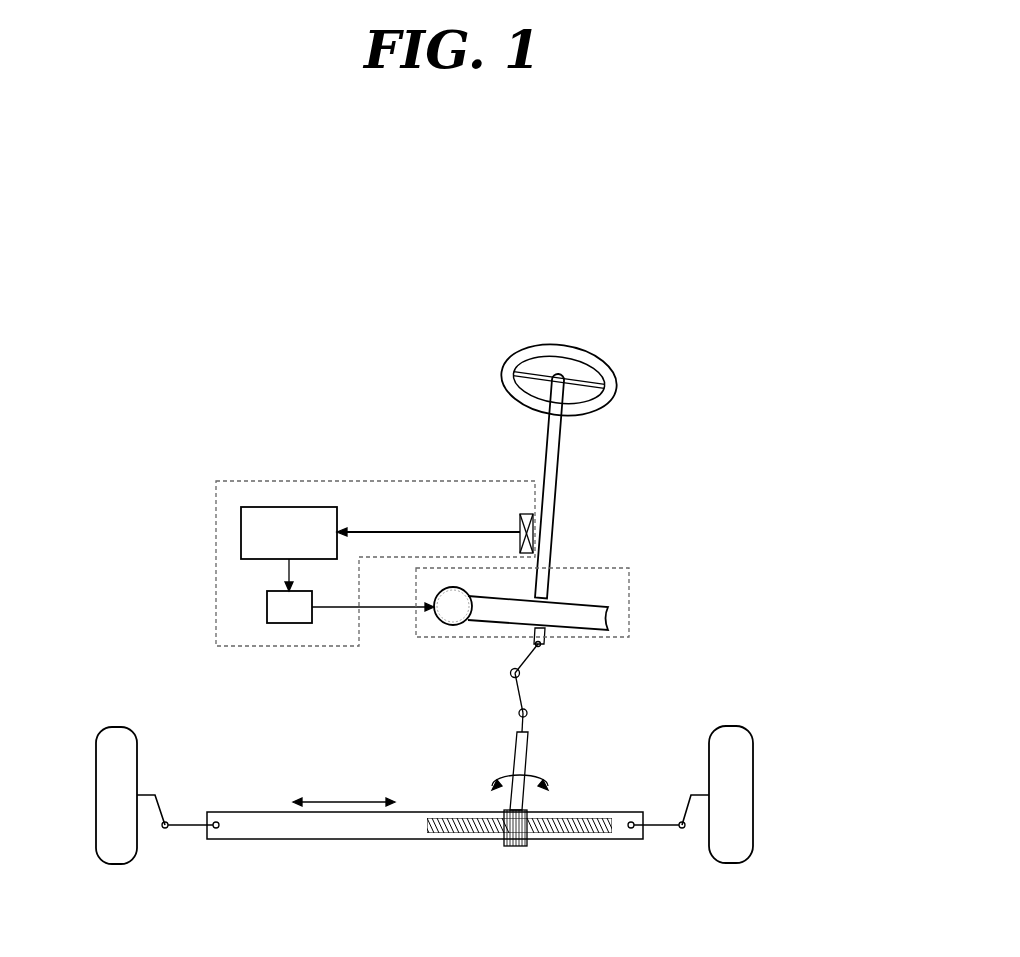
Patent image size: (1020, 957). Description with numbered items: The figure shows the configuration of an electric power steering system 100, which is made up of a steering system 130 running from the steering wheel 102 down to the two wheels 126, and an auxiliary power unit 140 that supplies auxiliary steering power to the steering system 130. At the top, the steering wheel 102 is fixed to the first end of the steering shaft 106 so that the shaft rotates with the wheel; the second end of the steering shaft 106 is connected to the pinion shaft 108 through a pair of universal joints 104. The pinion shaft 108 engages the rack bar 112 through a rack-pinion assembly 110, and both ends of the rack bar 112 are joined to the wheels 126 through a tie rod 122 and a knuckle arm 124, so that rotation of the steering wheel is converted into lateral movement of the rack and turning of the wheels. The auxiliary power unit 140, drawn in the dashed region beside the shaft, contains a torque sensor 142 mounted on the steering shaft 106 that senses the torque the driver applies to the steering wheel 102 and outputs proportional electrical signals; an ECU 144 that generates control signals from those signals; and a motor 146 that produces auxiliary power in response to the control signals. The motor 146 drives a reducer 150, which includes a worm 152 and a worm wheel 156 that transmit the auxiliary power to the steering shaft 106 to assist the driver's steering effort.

The electric power steering system 100 is at (263, 293).
The steering wheel 102 is at (502, 372).
The universal joints 104 is at (528, 660).
The steering shaft 106 is at (560, 475).
The pinion shaft 108 is at (513, 758).
The rack-pinion assembly 110 is at (545, 833).
The rack bar 112 is at (278, 818).
The right tie rod / knuckle 122 is at (667, 822).
The knuckle arm 124 is at (150, 793).
The wheels 126 is at (740, 736).
The steering system 130 is at (565, 458).
The auxiliary power unit 140 is at (216, 520).
The torque sensor 142 is at (520, 530).
The Electronic Control Unit (ECU) 144 is at (337, 512).
The motor 146 is at (267, 604).
The reducer 150 is at (629, 607).
The worm 152 is at (456, 612).
The worm wheel 156 is at (548, 600).